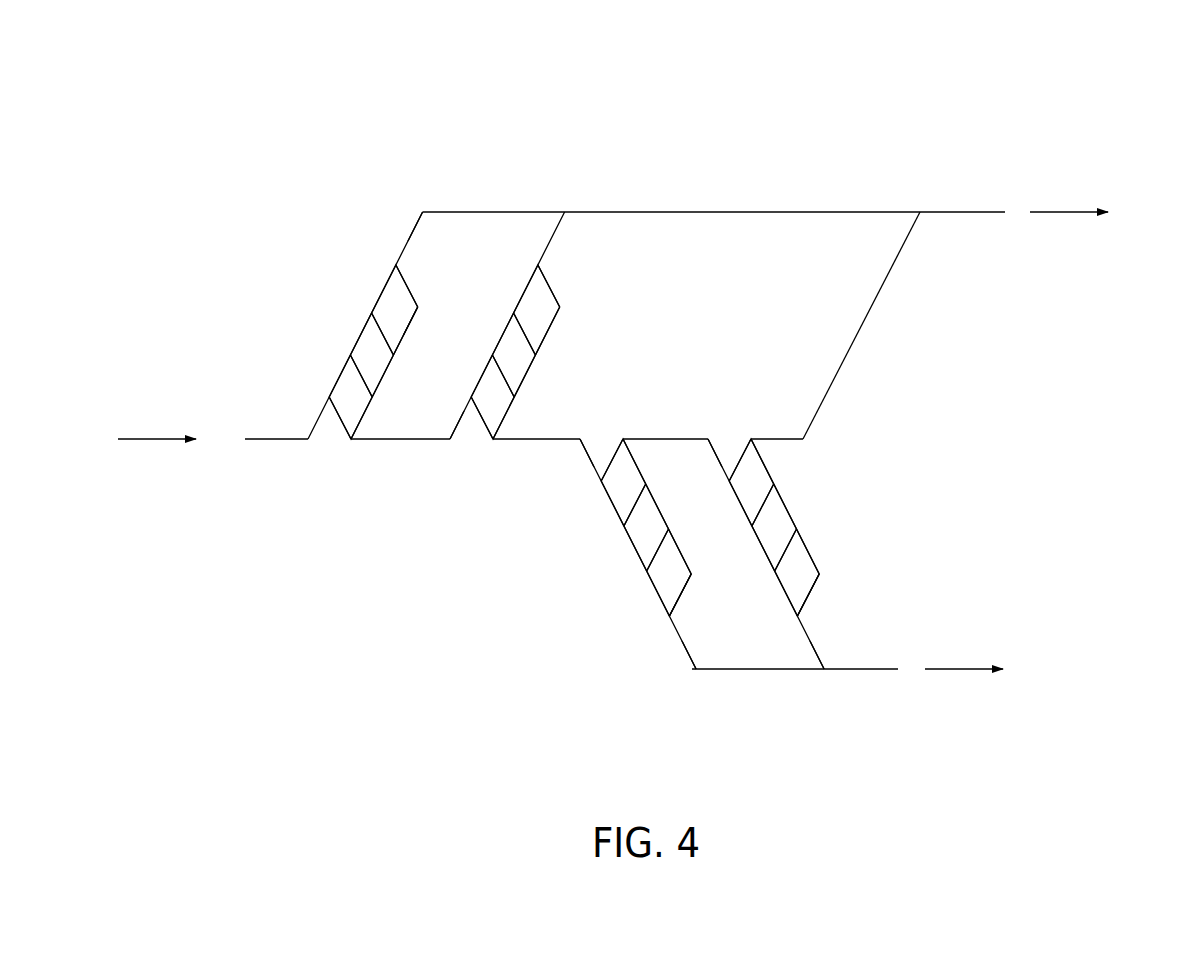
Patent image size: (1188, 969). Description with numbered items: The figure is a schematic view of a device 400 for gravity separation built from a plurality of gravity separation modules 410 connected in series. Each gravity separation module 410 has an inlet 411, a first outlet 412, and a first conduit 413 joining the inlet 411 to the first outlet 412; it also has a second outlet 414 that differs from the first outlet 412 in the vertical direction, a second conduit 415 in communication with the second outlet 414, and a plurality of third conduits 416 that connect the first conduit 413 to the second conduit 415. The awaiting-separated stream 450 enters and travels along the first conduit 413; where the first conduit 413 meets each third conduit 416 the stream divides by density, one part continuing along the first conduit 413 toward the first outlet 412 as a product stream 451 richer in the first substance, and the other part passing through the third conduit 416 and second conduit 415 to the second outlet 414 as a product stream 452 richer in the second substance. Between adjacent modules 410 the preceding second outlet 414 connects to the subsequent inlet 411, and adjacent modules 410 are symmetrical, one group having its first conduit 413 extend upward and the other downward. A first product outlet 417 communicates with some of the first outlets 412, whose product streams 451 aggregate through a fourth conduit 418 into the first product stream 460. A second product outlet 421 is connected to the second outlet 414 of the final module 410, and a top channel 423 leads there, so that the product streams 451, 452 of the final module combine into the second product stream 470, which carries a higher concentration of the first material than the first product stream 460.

The device for gravity separation 400 is at (1066, 90).
The gravity separation module 410 is at (563, 441).
The inlet 411 is at (275, 443).
The first outlet 412 is at (407, 248).
The first conduit 413 is at (365, 325).
The second outlet 414 is at (398, 443).
The second conduit 415 is at (388, 366).
The third conduit 416 is at (338, 422).
The first product outlet 417 is at (847, 672).
The fourth conduit 418 is at (758, 672).
The second product outlet 421 is at (962, 211).
The top channel 423 is at (730, 211).
The awaiting-separated stream 450 is at (162, 437).
The product stream 451 is at (413, 232).
The product stream 452 is at (411, 287).
The first product stream 460 is at (970, 667).
The second product stream 470 is at (1073, 211).